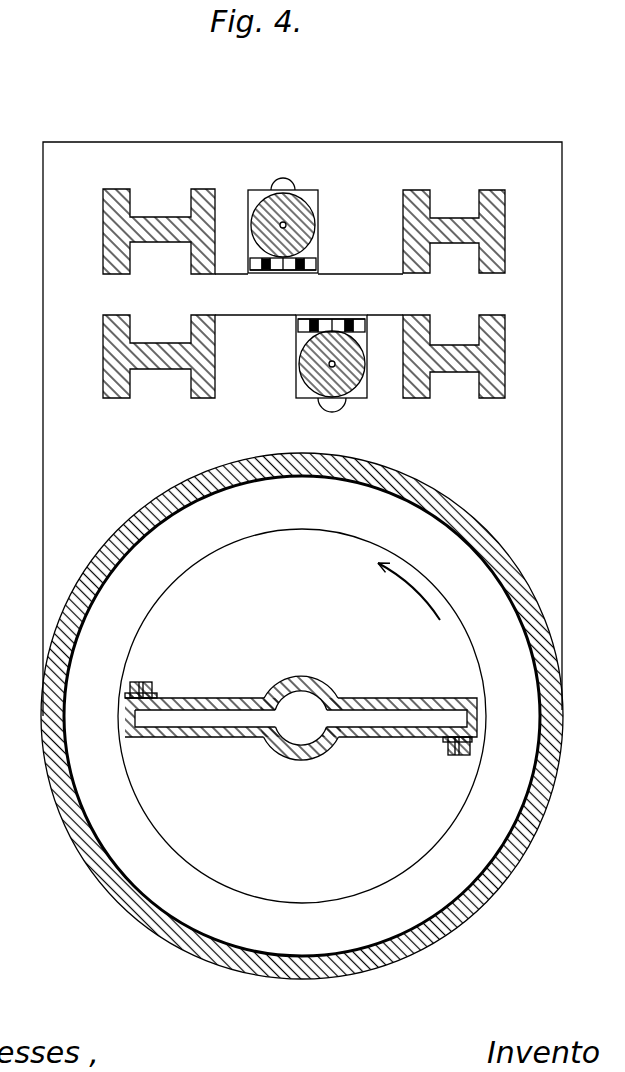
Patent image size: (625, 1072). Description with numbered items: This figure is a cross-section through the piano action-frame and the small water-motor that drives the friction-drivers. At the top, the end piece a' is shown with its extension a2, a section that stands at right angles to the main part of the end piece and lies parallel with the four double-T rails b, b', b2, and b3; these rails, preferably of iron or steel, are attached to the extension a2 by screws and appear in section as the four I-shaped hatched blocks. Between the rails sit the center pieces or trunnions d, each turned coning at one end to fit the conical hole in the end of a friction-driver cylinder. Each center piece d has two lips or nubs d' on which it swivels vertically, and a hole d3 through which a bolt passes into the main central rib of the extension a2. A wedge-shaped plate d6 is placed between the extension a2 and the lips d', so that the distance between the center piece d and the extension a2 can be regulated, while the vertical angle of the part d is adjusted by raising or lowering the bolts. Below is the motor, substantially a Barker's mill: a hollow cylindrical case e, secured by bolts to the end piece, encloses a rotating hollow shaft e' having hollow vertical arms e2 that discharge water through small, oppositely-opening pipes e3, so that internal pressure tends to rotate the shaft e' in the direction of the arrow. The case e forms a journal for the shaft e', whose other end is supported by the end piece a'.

The end piece a' is at (302, 429).
The extension a2 is at (301, 294).
The double-T rail b is at (159, 220).
The double-T rail b' is at (454, 228).
The double-T rail b2 is at (159, 362).
The double-T rail b3 is at (454, 365).
The center piece or trunnion d is at (307, 294).
The lips or nubs d' is at (318, 297).
The hole d3 is at (298, 187).
The wedge-shaped plate d6 is at (330, 327).
The hollow cylindrical case e is at (302, 716).
The rotating hollow shaft e' is at (301, 718).
The hollow vertical arm e2 is at (187, 710).
The oppositely-opening pipe e3 is at (140, 683).